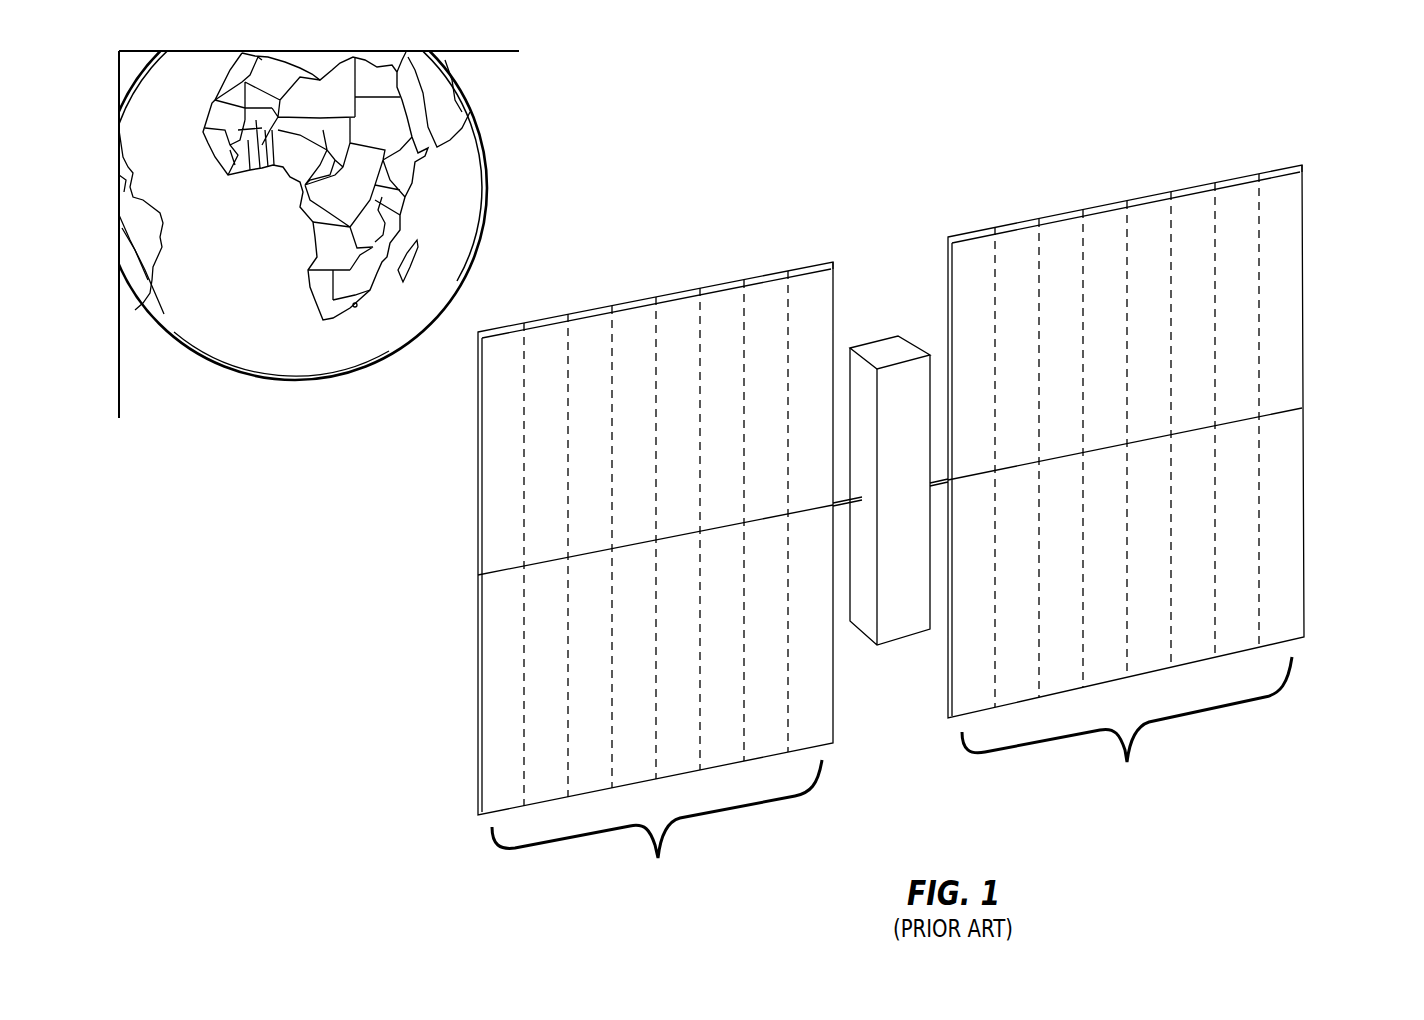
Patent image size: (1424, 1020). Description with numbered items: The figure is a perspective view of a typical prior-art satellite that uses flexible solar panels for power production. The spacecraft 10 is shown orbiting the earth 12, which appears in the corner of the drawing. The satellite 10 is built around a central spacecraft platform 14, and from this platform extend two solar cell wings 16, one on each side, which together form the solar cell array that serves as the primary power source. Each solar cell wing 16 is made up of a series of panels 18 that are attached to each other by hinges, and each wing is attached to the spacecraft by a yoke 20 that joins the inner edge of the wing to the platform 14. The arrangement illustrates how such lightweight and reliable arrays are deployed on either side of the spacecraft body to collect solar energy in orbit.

The spacecraft 10 is at (951, 527).
The earth 12 is at (237, 366).
The spacecraft platform 14 is at (892, 506).
The solar cell wing 16 is at (891, 527).
The panel 18 is at (488, 444).
The yoke 20 is at (840, 495).